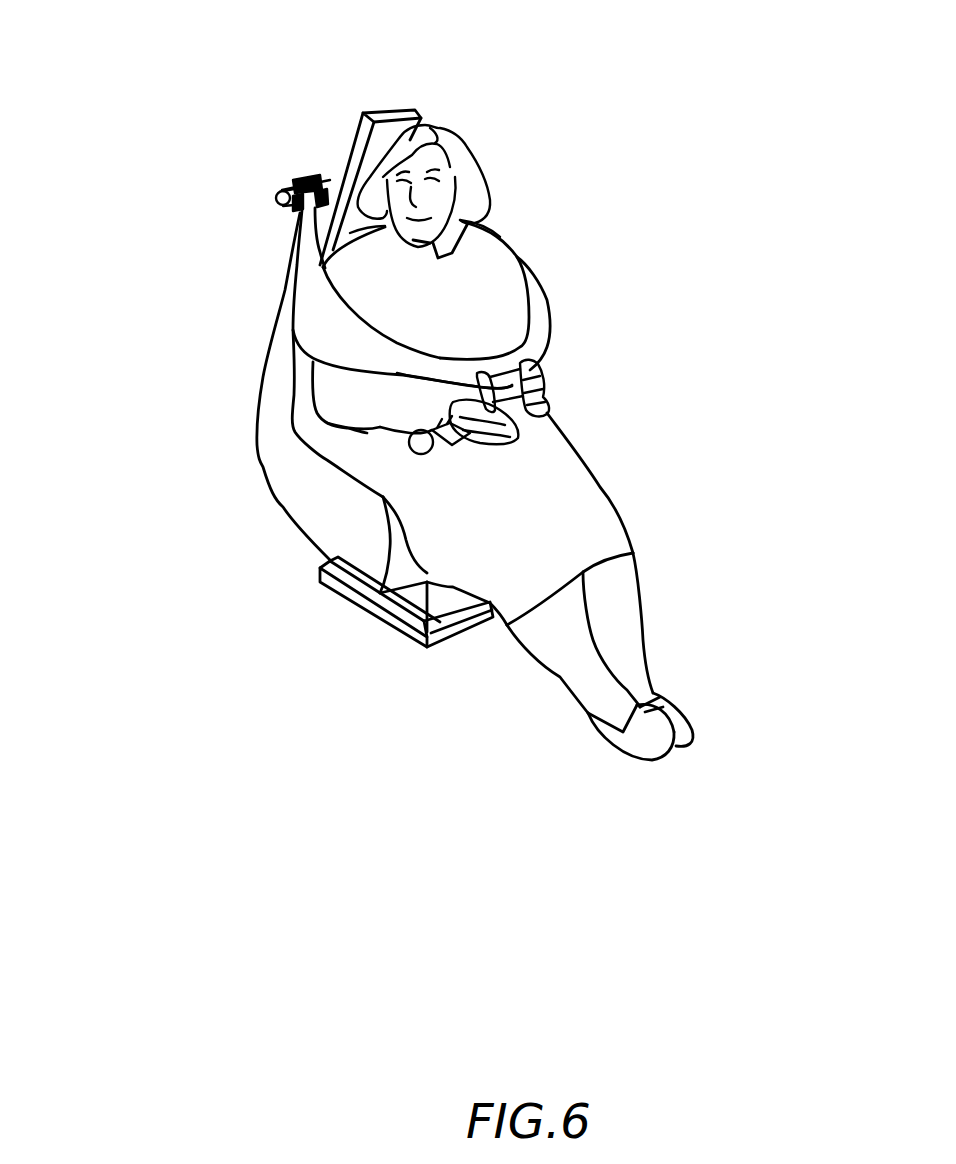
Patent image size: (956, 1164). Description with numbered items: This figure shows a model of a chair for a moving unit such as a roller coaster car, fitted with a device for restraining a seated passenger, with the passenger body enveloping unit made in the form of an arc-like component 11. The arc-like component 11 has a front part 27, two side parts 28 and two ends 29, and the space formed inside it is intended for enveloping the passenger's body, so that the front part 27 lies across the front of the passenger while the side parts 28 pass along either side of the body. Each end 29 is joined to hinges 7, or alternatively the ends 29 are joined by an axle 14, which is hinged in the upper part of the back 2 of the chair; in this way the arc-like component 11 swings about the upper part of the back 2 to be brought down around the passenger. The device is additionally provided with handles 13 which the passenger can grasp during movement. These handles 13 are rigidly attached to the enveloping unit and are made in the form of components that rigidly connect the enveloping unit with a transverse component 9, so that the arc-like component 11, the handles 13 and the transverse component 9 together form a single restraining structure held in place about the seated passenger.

The back 2 is at (363, 130).
The hinges 7 is at (300, 177).
The axle 14 is at (275, 200).
The ends 29 is at (314, 295).
The side parts 28 is at (355, 345).
The arc-like component 11 is at (423, 365).
The transverse component 9 is at (487, 407).
The handles 13 is at (482, 446).
The front part 27 is at (549, 389).